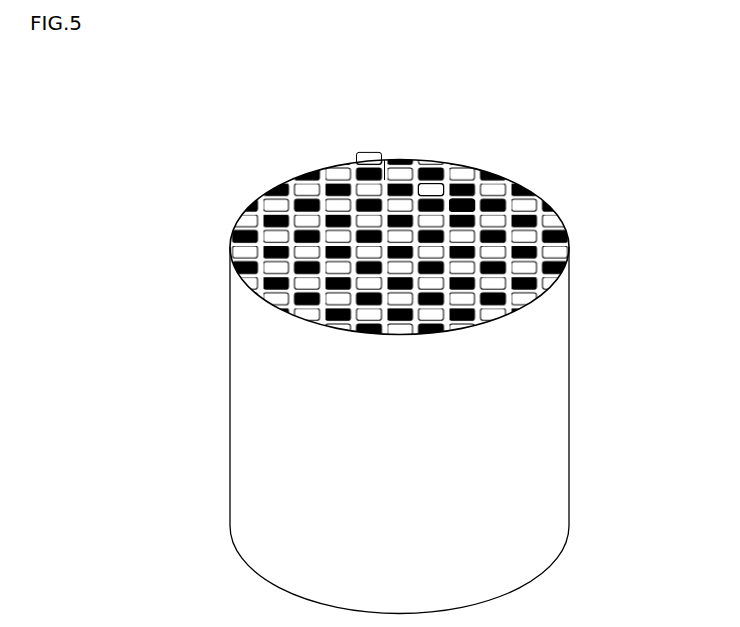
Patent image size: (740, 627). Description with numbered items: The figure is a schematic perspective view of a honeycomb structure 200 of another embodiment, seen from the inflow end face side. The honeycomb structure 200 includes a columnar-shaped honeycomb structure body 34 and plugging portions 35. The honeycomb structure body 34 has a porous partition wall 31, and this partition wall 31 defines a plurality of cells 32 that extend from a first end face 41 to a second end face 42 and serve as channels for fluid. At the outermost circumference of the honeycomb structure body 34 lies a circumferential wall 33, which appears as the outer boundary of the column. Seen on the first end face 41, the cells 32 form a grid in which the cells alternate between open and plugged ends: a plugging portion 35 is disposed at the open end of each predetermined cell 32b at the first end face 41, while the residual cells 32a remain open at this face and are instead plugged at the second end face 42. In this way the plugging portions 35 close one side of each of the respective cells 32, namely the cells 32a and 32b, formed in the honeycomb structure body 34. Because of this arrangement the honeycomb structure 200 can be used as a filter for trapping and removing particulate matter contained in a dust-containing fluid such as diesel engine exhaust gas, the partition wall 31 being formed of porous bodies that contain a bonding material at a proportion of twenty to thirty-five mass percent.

The honeycomb structure 200 is at (626, 72).
The partition wall 31 is at (388, 158).
The cell 32 is at (513, 159).
The residual cell 32a is at (437, 190).
The predetermined cell 32b is at (450, 202).
The circumferential wall 33 is at (569, 315).
The honeycomb structure body 34 is at (570, 390).
The plugging portion 35 is at (366, 160).
The first end face 41 is at (263, 197).
The second end face 42 is at (545, 583).